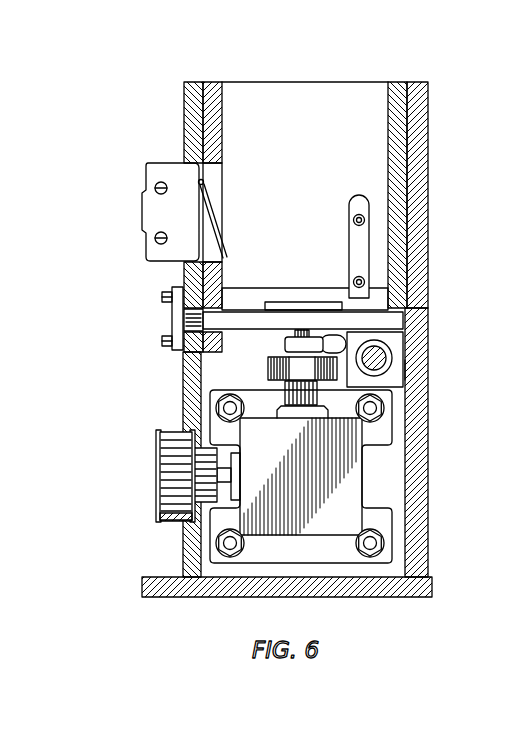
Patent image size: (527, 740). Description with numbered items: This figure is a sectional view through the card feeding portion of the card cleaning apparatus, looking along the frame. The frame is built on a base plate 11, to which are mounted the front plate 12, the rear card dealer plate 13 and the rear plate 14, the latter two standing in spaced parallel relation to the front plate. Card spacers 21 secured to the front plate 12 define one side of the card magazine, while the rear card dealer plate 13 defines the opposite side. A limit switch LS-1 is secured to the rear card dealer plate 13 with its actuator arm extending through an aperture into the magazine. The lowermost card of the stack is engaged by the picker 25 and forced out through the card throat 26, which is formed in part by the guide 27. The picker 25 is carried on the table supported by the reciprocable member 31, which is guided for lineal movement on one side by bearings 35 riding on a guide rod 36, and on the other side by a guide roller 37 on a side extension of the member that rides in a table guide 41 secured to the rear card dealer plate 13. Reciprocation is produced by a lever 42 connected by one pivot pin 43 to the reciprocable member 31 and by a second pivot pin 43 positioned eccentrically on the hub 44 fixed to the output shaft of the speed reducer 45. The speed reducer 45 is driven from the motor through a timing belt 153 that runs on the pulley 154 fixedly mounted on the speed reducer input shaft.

The base plate 11 is at (388, 597).
The front plate 12 is at (428, 253).
The rear card dealer plate 13 is at (215, 82).
The rear plate 14 is at (190, 82).
The card spacers 21 is at (397, 82).
The picker 25 is at (300, 305).
The card throat 26 is at (242, 296).
The guide 27 is at (355, 247).
The reciprocable member 31 is at (418, 316).
The bearings 35 is at (418, 371).
The guide rod 36 is at (418, 350).
The guide roller 37 is at (184, 321).
The table guide 41 is at (180, 292).
The lever 42 is at (285, 345).
The pivot pin 43 is at (302, 330).
The hub 44 is at (268, 368).
The speed reducer 45 is at (354, 470).
The timing belt 153 is at (164, 520).
The pulley 154 is at (157, 473).
The limit switch LS-1 is at (163, 172).